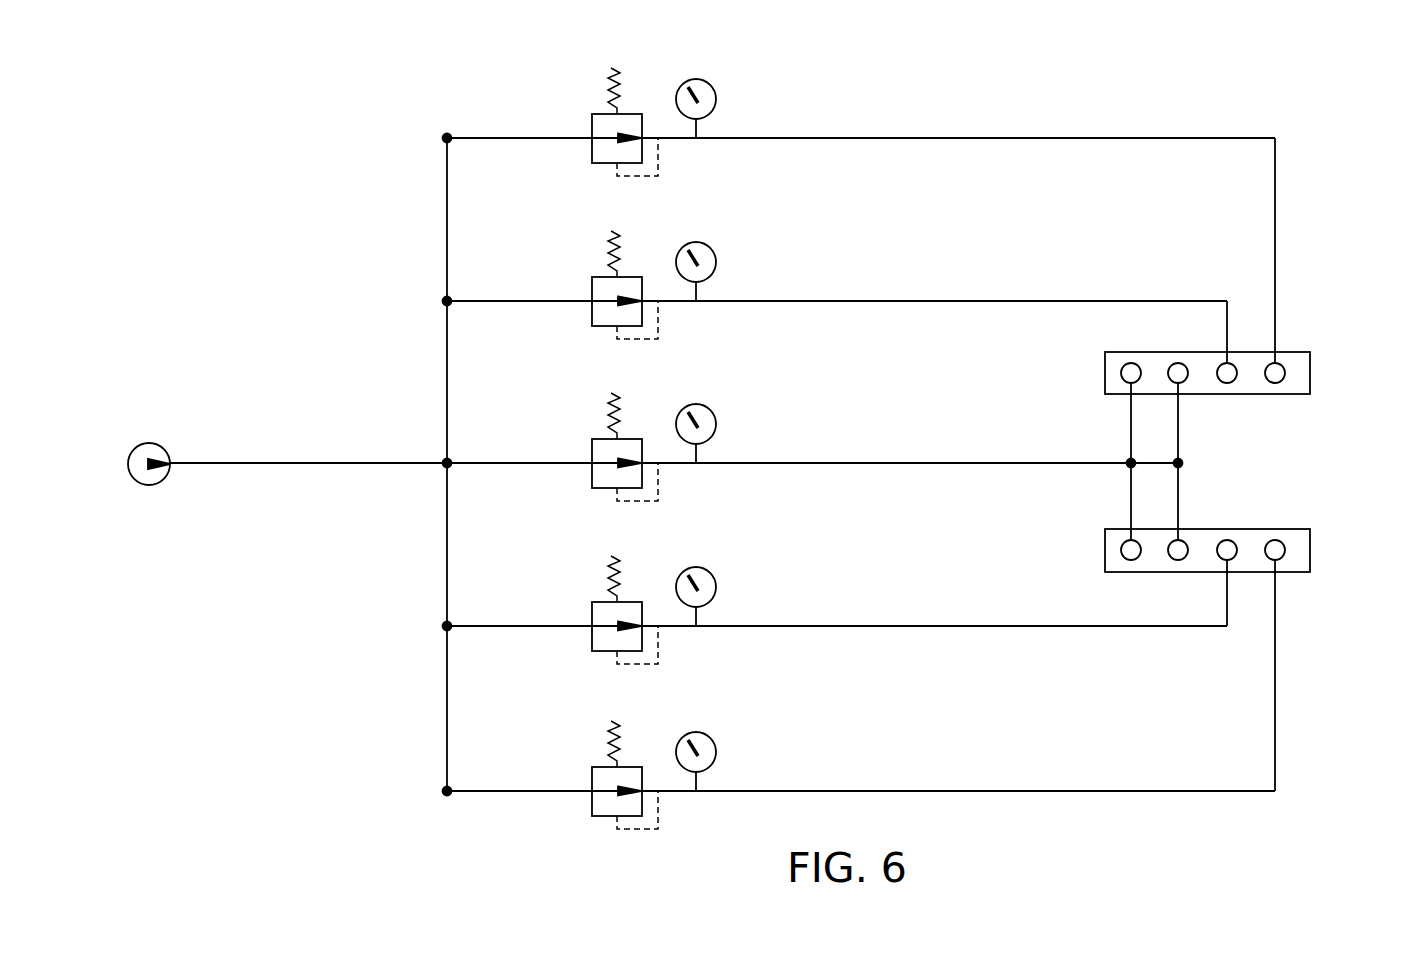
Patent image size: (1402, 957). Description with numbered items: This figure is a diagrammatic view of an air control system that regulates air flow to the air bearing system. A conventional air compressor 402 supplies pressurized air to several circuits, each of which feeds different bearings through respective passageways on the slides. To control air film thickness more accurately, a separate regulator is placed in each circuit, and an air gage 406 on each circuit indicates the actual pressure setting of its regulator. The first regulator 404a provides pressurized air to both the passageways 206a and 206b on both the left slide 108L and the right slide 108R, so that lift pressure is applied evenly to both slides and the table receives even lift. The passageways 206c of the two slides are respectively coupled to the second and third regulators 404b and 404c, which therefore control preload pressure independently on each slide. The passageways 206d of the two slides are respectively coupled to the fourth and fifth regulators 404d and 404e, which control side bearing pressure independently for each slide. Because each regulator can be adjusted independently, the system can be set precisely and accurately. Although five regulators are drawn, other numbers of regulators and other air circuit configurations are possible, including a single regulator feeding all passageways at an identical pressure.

The air compressor 402 is at (149, 443).
The first regulator 404a is at (601, 439).
The second regulator 404b is at (601, 277).
The third regulator 404c is at (601, 602).
The fourth regulator 404d is at (601, 114).
The fifth regulator 404e is at (601, 767).
The air gage 406 is at (711, 86).
The left slide 108L is at (1311, 373).
The right slide 108R is at (1311, 550).
The passageway 206a is at (1129, 363).
The passageway 206b is at (1176, 363).
The passageway 206c is at (1227, 383).
The passageway 206d is at (1275, 383).